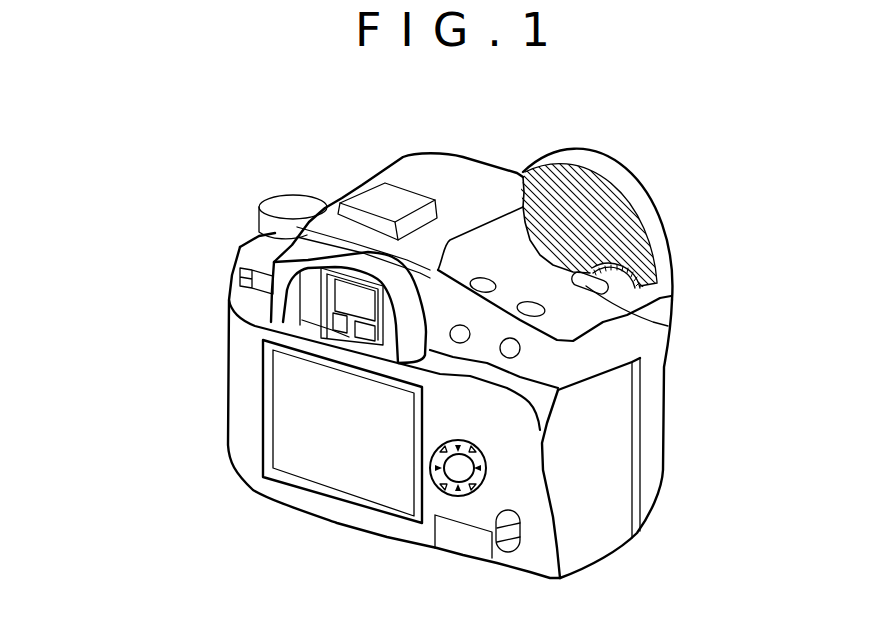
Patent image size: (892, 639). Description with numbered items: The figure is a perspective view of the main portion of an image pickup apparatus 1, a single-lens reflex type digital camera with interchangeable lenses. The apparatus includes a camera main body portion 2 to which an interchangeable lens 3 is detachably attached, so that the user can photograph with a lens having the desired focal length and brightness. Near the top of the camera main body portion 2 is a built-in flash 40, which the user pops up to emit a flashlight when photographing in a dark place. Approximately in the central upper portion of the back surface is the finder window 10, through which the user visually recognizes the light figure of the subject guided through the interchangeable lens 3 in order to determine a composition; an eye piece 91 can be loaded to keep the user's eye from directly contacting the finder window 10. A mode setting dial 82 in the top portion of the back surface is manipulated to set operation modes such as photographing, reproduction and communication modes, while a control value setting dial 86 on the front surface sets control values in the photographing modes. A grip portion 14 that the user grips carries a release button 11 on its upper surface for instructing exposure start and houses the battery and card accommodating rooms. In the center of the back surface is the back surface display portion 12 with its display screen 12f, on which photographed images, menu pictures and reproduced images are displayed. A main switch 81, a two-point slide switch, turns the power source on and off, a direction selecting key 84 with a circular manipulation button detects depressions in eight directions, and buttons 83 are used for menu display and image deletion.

The image pickup apparatus 1 is at (200, 139).
The camera main body portion 2 is at (593, 555).
The interchangeable lens 3 is at (633, 204).
The finder window 10 is at (350, 303).
The release button 11 is at (637, 300).
The back surface display portion 12 is at (290, 486).
The display screen 12f is at (333, 463).
The grip portion 14 is at (666, 474).
The built-in flash 40 is at (401, 153).
The main switch 81 is at (240, 273).
The mode setting dial 82 is at (295, 206).
The buttons 83 is at (518, 356).
The direction selecting key 84 is at (458, 500).
The control value setting dial 86 is at (643, 290).
The eye piece 91 is at (293, 257).